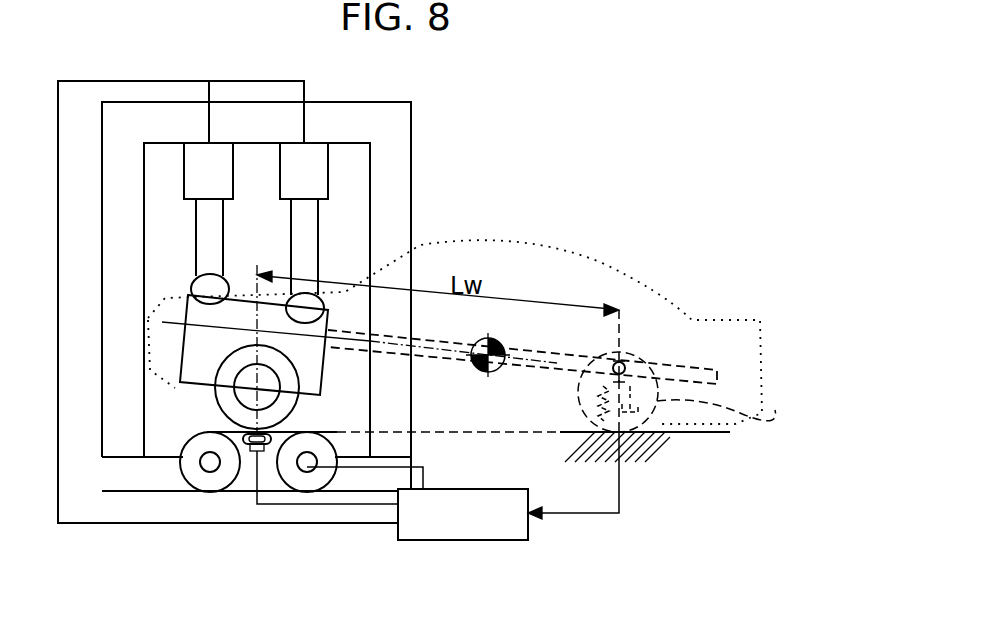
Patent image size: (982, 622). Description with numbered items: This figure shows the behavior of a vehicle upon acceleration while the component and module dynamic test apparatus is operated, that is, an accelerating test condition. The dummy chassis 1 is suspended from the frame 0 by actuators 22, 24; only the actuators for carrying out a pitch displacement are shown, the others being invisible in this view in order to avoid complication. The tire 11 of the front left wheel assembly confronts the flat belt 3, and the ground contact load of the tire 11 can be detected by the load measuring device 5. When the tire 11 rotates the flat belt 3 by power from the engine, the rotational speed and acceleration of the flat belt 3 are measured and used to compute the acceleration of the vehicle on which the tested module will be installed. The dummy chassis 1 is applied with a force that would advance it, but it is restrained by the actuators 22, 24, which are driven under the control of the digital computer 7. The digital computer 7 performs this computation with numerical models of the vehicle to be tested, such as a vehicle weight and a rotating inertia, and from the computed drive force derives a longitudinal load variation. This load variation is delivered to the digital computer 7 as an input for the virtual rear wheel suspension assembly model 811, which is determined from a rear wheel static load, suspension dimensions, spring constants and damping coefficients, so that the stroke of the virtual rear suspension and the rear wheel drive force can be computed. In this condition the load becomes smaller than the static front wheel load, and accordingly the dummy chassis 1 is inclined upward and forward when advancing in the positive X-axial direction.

The frame 0 is at (412, 130).
The dummy chassis 1 is at (180, 304).
The actuator 22 is at (233, 178).
The actuator 24 is at (328, 178).
The tire 11 is at (297, 410).
The flat belt 3 is at (202, 470).
The load measuring device 5 is at (253, 452).
The digital computer 7 is at (450, 541).
The virtual rear wheel suspension assembly model 811 is at (766, 410).